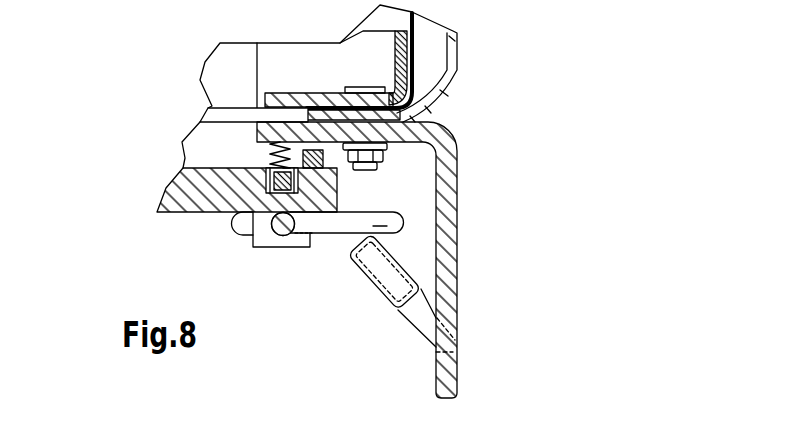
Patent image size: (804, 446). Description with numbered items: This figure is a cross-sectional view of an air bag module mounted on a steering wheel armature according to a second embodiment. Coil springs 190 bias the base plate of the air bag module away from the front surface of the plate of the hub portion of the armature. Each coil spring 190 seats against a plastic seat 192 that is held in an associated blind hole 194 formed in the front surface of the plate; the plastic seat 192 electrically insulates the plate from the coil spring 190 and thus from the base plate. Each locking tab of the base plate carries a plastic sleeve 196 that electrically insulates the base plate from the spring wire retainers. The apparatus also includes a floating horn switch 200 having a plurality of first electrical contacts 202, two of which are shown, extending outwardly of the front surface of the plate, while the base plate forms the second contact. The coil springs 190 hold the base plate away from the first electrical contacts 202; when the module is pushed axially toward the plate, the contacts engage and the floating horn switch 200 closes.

The coil spring 190 is at (280, 148).
The plastic seat 192 is at (271, 190).
The blind hole 194 is at (265, 192).
The plastic sleeve 196 is at (367, 283).
The floating horn switch 200 is at (404, 160).
The first electrical contact 202 is at (326, 160).